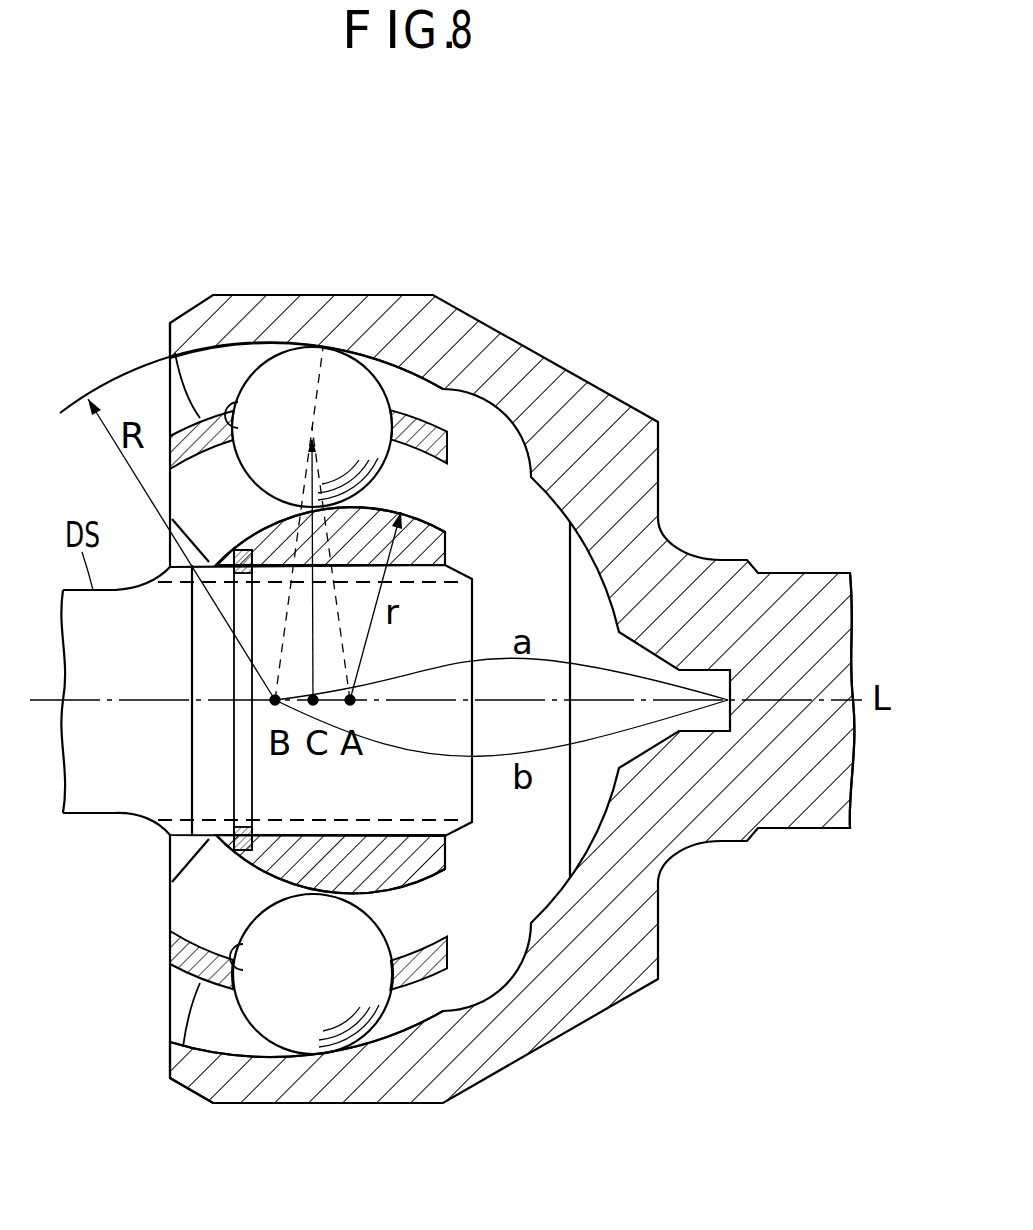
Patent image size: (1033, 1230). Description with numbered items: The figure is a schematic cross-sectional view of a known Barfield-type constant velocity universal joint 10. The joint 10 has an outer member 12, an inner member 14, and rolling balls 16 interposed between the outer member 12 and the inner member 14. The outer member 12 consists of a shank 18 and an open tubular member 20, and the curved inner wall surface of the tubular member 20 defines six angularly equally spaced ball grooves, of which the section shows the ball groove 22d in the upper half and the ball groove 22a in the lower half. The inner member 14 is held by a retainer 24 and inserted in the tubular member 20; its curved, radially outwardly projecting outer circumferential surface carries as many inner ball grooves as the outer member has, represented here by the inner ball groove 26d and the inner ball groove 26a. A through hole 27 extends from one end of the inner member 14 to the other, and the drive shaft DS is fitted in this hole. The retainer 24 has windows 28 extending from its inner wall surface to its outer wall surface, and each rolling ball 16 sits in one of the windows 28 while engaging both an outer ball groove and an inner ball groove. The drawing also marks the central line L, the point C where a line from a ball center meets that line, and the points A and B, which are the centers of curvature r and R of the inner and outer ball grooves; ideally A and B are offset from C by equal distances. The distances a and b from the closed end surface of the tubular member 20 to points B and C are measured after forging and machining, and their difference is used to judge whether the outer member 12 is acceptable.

The constant velocity universal joint 10 is at (175, 105).
The outer member 12 is at (198, 288).
The inner member 14 is at (258, 840).
The rolling balls 16 is at (337, 372).
The shank 18 is at (798, 597).
The tubular member 20 is at (398, 1090).
The ball groove 22a is at (247, 1047).
The ball groove 22d is at (424, 388).
The retainer 24 is at (175, 967).
The inner ball groove 26a is at (430, 910).
The inner ball groove 26d is at (437, 502).
The through hole 27 is at (276, 556).
The windows 28 is at (232, 407).